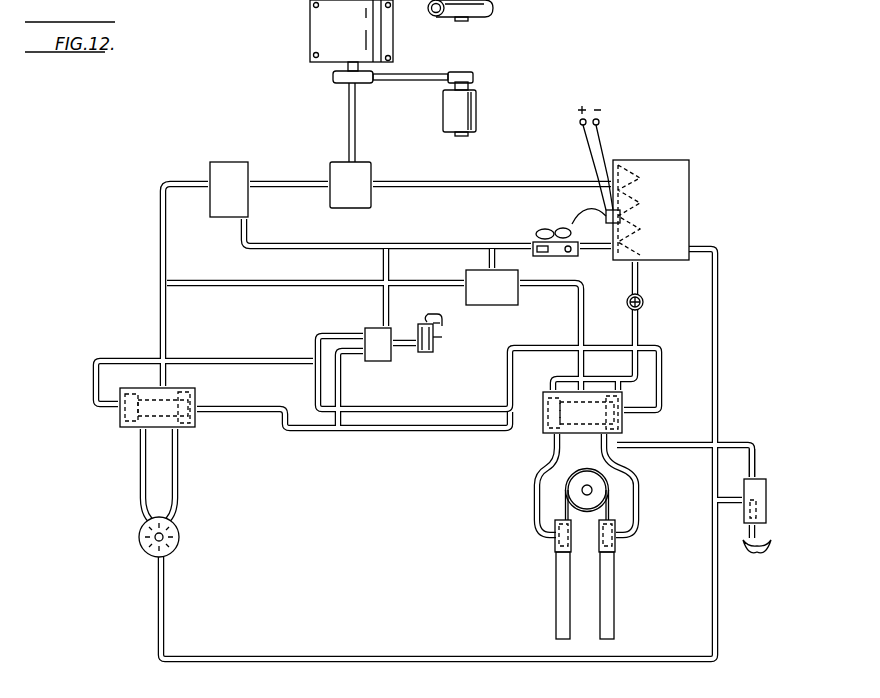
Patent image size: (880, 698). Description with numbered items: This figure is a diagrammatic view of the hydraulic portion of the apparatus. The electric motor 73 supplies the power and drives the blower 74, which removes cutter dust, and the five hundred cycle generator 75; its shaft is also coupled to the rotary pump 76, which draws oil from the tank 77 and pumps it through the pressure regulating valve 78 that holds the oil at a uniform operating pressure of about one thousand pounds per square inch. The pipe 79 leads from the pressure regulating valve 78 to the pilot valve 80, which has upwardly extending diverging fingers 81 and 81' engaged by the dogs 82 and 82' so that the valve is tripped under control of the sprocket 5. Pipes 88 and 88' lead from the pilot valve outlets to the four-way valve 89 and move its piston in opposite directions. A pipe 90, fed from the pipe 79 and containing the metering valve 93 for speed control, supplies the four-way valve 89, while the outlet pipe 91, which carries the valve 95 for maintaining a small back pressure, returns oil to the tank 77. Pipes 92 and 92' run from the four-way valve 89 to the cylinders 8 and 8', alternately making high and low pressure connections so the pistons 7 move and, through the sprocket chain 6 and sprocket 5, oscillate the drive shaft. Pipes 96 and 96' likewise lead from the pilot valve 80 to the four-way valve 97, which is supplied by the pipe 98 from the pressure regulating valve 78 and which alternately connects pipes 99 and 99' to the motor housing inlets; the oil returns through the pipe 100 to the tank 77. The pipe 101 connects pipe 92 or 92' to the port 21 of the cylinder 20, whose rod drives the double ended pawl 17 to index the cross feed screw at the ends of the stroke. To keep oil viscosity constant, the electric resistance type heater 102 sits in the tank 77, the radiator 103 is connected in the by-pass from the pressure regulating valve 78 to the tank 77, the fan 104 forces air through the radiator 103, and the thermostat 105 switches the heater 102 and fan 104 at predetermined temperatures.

The sprocket 5 is at (590, 506).
The sprocket chain 6 is at (562, 507).
The pistons 7 is at (554, 545).
The cylinder 8 is at (546, 595).
The cylinder 8' is at (622, 595).
The double ended pawl 17 is at (765, 541).
The cylinder 20 is at (767, 497).
The port 21 is at (754, 462).
The electric motor 73 is at (333, 38).
The blower 74 is at (494, 10).
The 500 cycle generator 75 is at (478, 108).
The rotary pump 76 is at (372, 172).
The tank 77 is at (690, 210).
The pressure regulating valve 78 is at (218, 220).
The pipe 79 is at (306, 290).
The pilot valve 80 is at (413, 352).
The finger 81 is at (414, 327).
The finger 81' is at (458, 338).
The dog 82 is at (437, 291).
The dog 82' is at (455, 314).
The pipe 88 is at (414, 372).
The pipe 88' is at (584, 361).
The four-way valve 89 is at (623, 431).
The pipe 90 is at (578, 289).
The outlet pipe 91 is at (640, 290).
The pipe 92 is at (532, 484).
The pipe 92' is at (641, 484).
The metering valve 93 is at (519, 276).
The valve 95 is at (644, 306).
The pipe 96 is at (204, 366).
The pipe 96' is at (353, 403).
The four-way valve 97 is at (120, 424).
The pipe 98 is at (167, 322).
The pipe 99 is at (125, 474).
The pipe 99' is at (197, 474).
The pipe 100 is at (270, 646).
The pipe 101 is at (686, 446).
The electric resistance type heater 102 is at (638, 158).
The radiator 103 is at (535, 243).
The fan 104 is at (546, 228).
The thermostat 105 is at (606, 218).